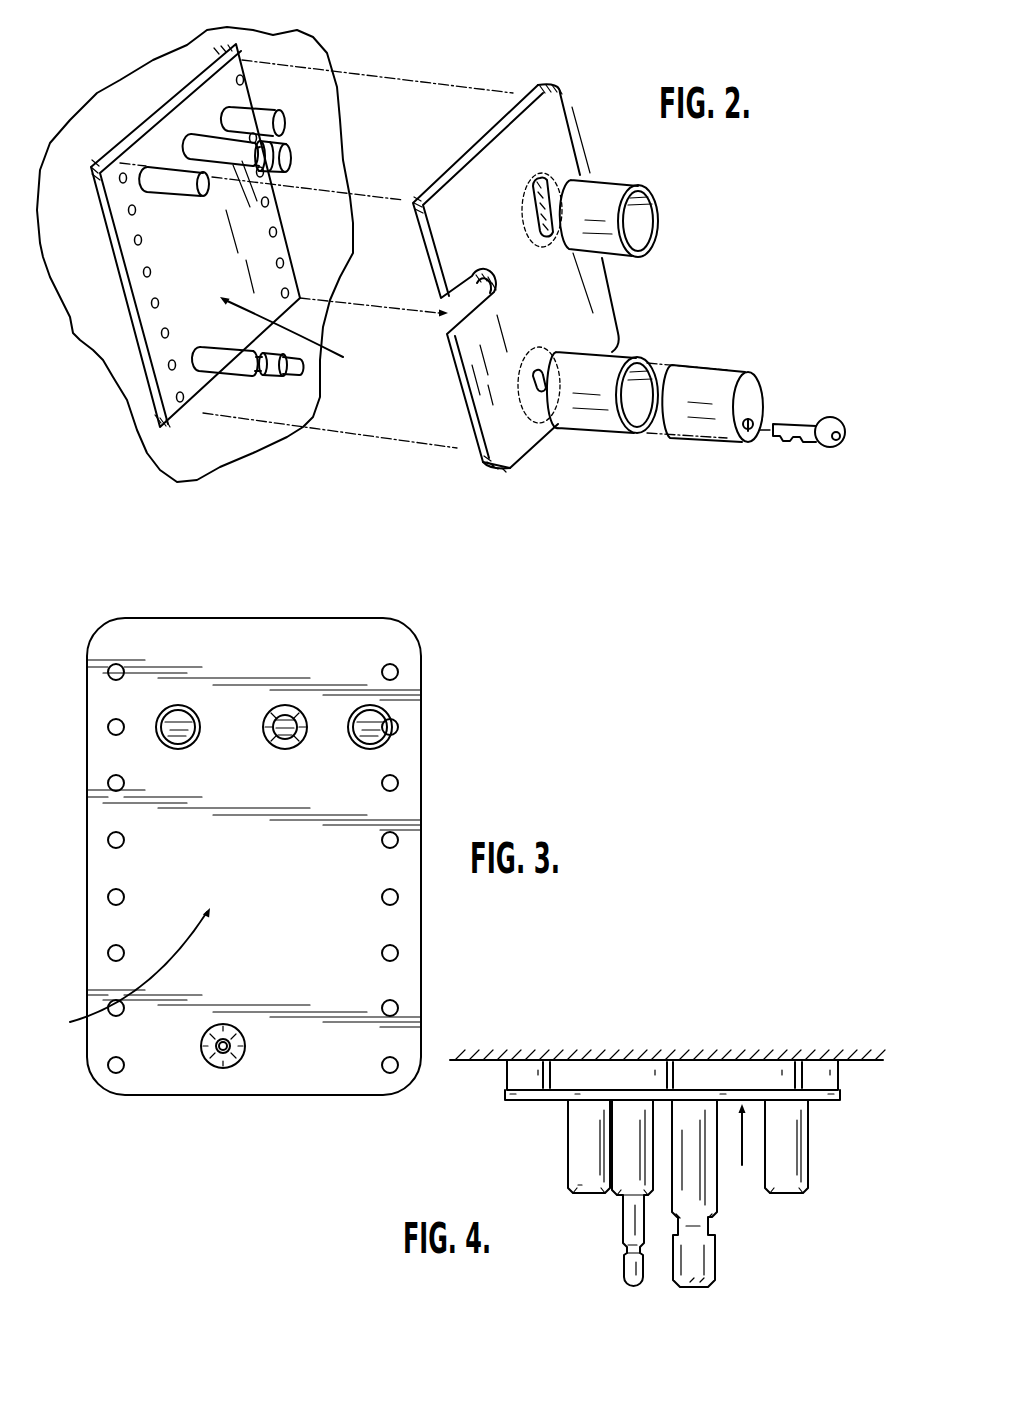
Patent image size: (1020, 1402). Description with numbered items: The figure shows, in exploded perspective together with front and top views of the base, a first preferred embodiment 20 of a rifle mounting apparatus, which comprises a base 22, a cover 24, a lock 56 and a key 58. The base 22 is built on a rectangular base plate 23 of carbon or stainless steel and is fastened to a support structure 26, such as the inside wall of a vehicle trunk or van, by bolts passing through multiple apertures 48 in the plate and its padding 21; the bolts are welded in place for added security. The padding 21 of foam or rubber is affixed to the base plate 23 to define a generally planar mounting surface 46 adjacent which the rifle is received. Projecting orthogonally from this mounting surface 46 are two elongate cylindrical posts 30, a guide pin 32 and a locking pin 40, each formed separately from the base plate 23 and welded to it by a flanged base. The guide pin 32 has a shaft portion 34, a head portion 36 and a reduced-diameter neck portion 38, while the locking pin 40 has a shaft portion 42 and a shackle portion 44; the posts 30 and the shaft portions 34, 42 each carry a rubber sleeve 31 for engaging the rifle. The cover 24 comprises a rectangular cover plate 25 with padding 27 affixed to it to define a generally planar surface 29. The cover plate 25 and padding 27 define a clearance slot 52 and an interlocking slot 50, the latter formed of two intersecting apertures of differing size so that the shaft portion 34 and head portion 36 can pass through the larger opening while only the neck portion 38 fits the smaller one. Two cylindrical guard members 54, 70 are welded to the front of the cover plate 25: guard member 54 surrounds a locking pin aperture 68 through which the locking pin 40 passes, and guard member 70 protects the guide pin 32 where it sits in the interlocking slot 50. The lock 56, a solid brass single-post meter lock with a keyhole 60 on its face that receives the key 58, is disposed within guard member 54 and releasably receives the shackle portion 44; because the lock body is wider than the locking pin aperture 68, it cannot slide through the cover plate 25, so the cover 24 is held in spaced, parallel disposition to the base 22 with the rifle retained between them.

In FIG. 2, the first preferred embodiment of the mounting apparatus 20 is at (443, 66).
In FIG. 2, the padding 21 is at (137, 292).
In FIG. 3, the padding 21 is at (290, 932).
In FIG. 4, the padding 21 is at (760, 1095).
In FIG. 2, the base 22 is at (188, 104).
In FIG. 3, the base 22 is at (97, 628).
In FIG. 4, the base 22 is at (572, 1038).
In FIG. 2, the base plate 23 is at (98, 198).
In FIG. 4, the base plate 23 is at (638, 1078).
In FIG. 2, the cover 24 is at (602, 305).
In FIG. 2, the cover plate 25 is at (568, 162).
In FIG. 2, the support structure 26 is at (193, 480).
In FIG. 4, the support structure 26 is at (815, 1055).
In FIG. 2, the padding 27 is at (536, 88).
In FIG. 2, the planar surface 29 is at (462, 142).
In FIG. 2, the posts 30 is at (267, 121).
In FIG. 3, the posts 30 is at (389, 742).
In FIG. 4, the posts 30 is at (575, 1150).
In FIG. 4, the rubber sleeve 31 is at (580, 1175).
In FIG. 2, the guide pin 32 is at (300, 160).
In FIG. 3, the guide pin 32 is at (290, 708).
In FIG. 4, the guide pin 32 is at (700, 1292).
In FIG. 4, the shaft portion 34 is at (700, 1188).
In FIG. 4, the head portion 36 is at (700, 1262).
In FIG. 4, the neck portion 38 is at (700, 1225).
In FIG. 2, the locking pin 40 is at (302, 380).
In FIG. 3, the locking pin 40 is at (245, 1044).
In FIG. 4, the locking pin 40 is at (633, 1290).
In FIG. 4, the shaft portion 42 is at (630, 1172).
In FIG. 4, the shackle portion 44 is at (618, 1245).
In FIG. 2, the mounting surface 46 is at (293, 334).
In FIG. 3, the mounting surface 46 is at (128, 974).
In FIG. 4, the mounting surface 46 is at (741, 1146).
In FIG. 2, the apertures 48 is at (283, 263).
In FIG. 3, the apertures 48 is at (397, 670).
In FIG. 2, the interlocking slot 50 is at (537, 170).
In FIG. 2, the clearance slot 52 is at (440, 316).
In FIG. 2, the guard member 54 is at (590, 424).
In FIG. 2, the lock 56 is at (698, 428).
In FIG. 2, the key 58 is at (828, 448).
In FIG. 2, the keyhole 60 is at (752, 422).
In FIG. 2, the locking pin aperture 68 is at (541, 391).
In FIG. 2, the guard member 70 is at (633, 207).